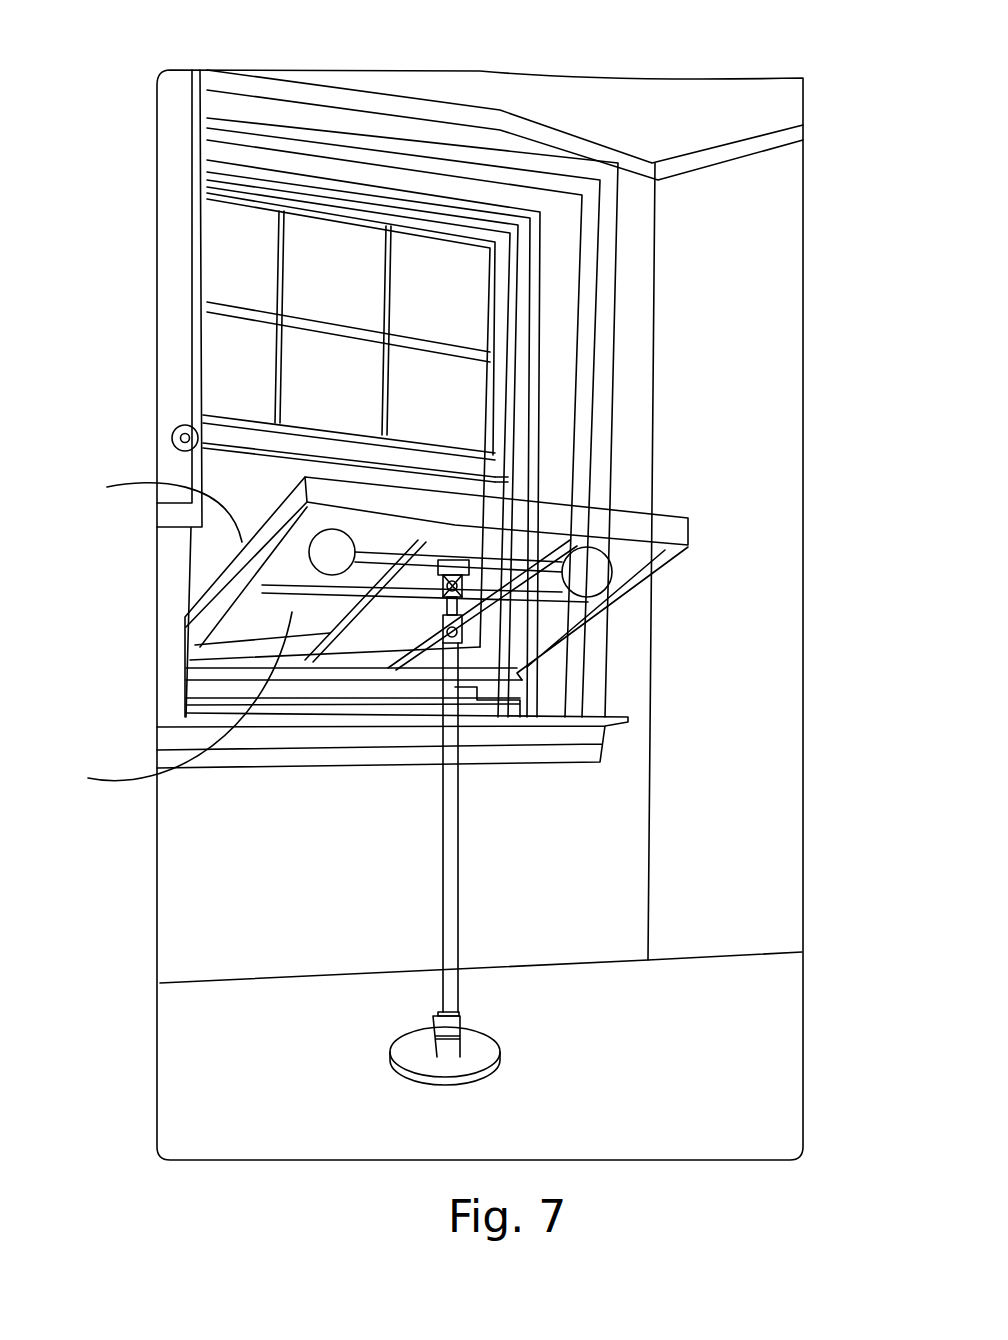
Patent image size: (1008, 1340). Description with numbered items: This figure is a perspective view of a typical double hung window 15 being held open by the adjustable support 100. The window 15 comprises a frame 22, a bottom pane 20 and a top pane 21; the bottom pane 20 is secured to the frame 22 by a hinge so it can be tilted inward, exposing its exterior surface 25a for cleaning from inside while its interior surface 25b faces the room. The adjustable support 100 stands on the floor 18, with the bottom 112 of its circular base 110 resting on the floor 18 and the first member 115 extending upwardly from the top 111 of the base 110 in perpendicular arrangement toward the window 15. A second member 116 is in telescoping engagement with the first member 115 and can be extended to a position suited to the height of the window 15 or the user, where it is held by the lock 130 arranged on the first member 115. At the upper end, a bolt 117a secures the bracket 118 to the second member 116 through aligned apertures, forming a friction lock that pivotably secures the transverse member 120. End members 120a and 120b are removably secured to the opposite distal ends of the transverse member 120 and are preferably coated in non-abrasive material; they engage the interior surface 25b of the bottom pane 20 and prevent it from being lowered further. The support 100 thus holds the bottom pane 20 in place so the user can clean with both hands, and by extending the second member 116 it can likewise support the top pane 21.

The double hung window 15 is at (648, 278).
The floor 18 is at (710, 1048).
The bottom pane 20 is at (218, 563).
The top pane 21 is at (229, 360).
The frame 22 is at (520, 203).
The exterior surface 25a is at (146, 510).
The interior surface 25b is at (165, 704).
The adjustable support 100 is at (475, 778).
The base 110 is at (453, 1090).
The top 111 is at (497, 1062).
The bottom 112 is at (422, 1082).
The first member 115 is at (460, 906).
The second member 116 is at (435, 622).
The bolt 117a is at (470, 606).
The bracket 118 is at (432, 583).
The transverse member 120 is at (475, 495).
The end member 120a is at (305, 562).
The end member 120b is at (615, 568).
The lock 130 is at (436, 648).